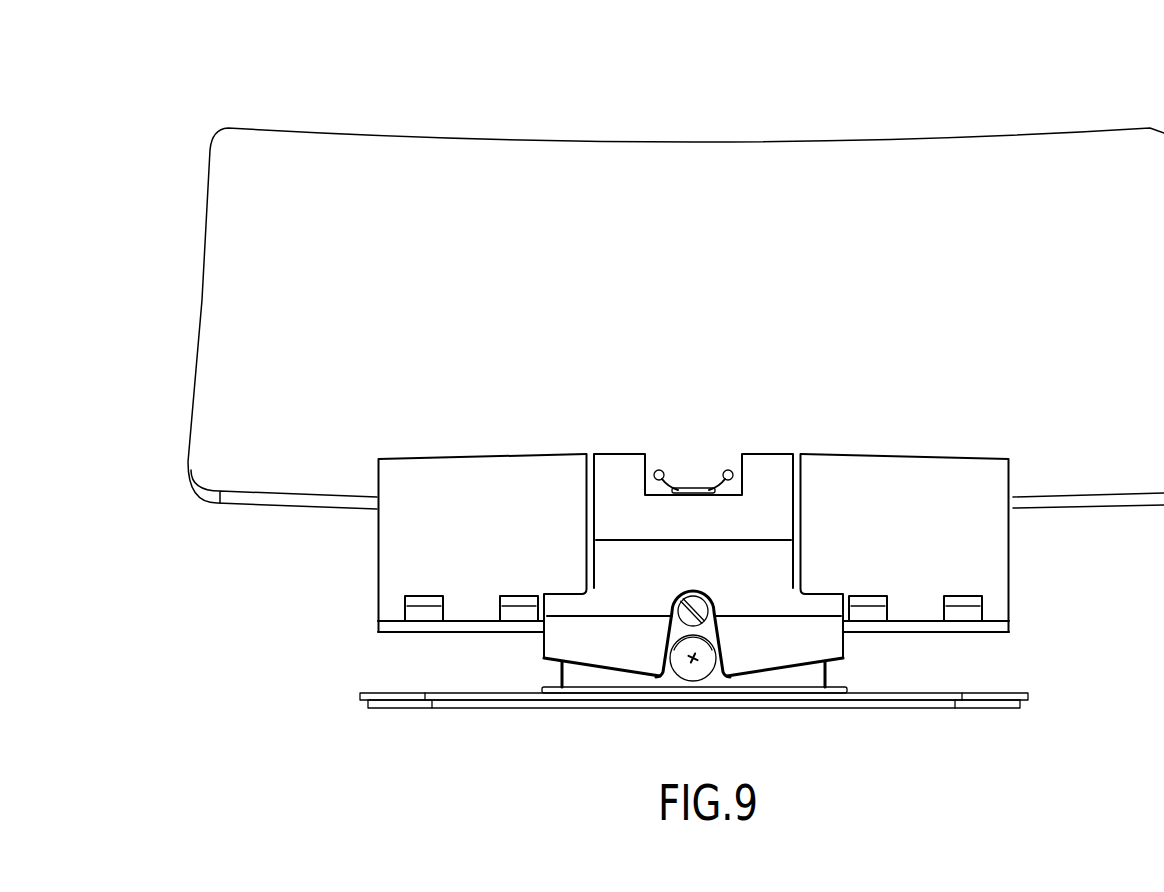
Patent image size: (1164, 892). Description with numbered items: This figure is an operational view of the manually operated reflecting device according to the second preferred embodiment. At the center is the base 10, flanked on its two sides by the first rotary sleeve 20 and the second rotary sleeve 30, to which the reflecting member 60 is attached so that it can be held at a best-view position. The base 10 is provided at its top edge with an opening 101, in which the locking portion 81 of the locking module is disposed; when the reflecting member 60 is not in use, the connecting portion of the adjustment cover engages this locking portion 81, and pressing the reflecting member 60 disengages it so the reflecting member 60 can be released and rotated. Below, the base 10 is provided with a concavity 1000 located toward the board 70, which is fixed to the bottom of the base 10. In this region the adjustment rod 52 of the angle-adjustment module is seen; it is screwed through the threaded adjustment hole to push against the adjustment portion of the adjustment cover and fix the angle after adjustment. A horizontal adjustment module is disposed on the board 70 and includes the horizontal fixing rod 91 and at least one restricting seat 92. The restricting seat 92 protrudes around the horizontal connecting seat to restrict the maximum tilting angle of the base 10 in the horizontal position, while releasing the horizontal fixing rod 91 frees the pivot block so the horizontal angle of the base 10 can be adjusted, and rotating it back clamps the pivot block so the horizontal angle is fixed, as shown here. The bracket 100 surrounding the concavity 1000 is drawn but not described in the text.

The reflecting member 60 is at (1021, 143).
The first rotary sleeve 20 is at (388, 562).
The second rotary sleeve 30 is at (998, 560).
The base 10 is at (625, 465).
The locking portion 81 is at (688, 488).
The opening 101 is at (726, 453).
The bracket 100 is at (833, 645).
The concavity 1000 is at (677, 628).
The adjustment rod 52 is at (702, 605).
The horizontal fixing rod 91 is at (685, 665).
The restricting seat 92 is at (570, 678).
The board 70 is at (1008, 695).